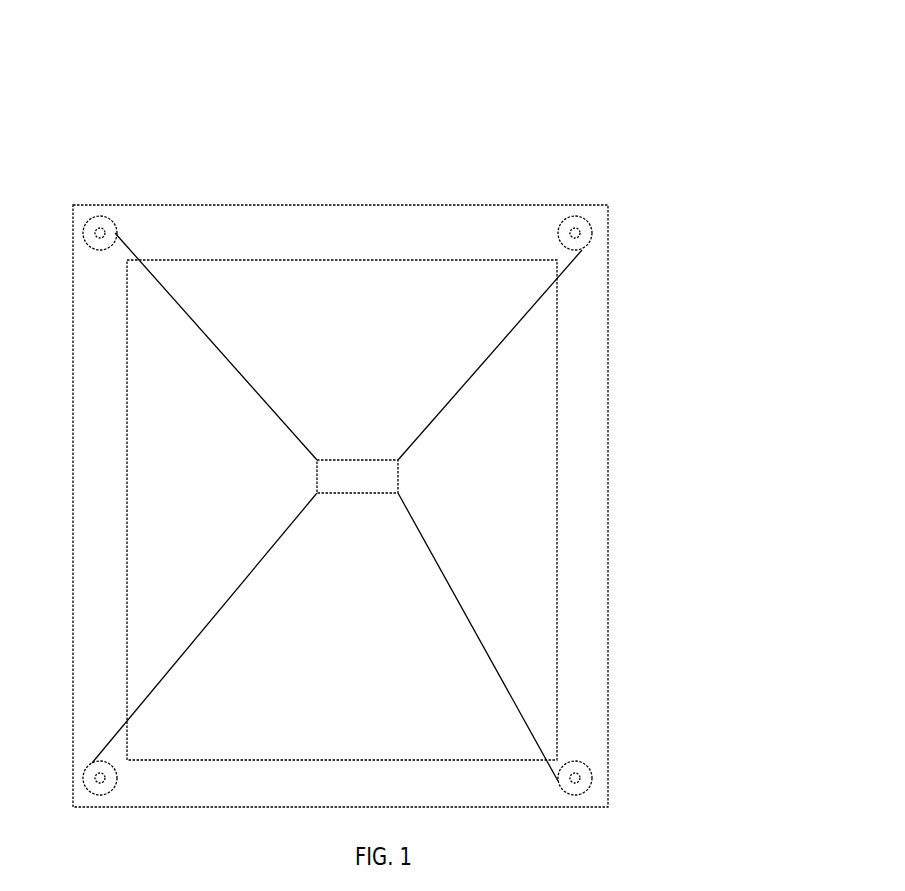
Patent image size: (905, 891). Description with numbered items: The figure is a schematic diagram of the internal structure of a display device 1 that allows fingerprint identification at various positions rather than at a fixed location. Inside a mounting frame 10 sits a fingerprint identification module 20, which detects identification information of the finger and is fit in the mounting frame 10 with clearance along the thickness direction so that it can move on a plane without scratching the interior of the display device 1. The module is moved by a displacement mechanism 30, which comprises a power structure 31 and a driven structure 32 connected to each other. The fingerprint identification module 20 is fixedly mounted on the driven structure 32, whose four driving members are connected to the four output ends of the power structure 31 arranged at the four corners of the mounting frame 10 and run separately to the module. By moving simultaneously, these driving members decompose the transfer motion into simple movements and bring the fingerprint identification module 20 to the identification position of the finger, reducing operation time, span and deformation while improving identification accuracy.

The display device 1 is at (275, 95).
The mounting frame 10 is at (288, 232).
The fingerprint identification module 20 is at (357, 473).
The displacement mechanism 30 is at (428, 451).
The power structure 31 is at (577, 231).
The driven structure 32 is at (409, 507).